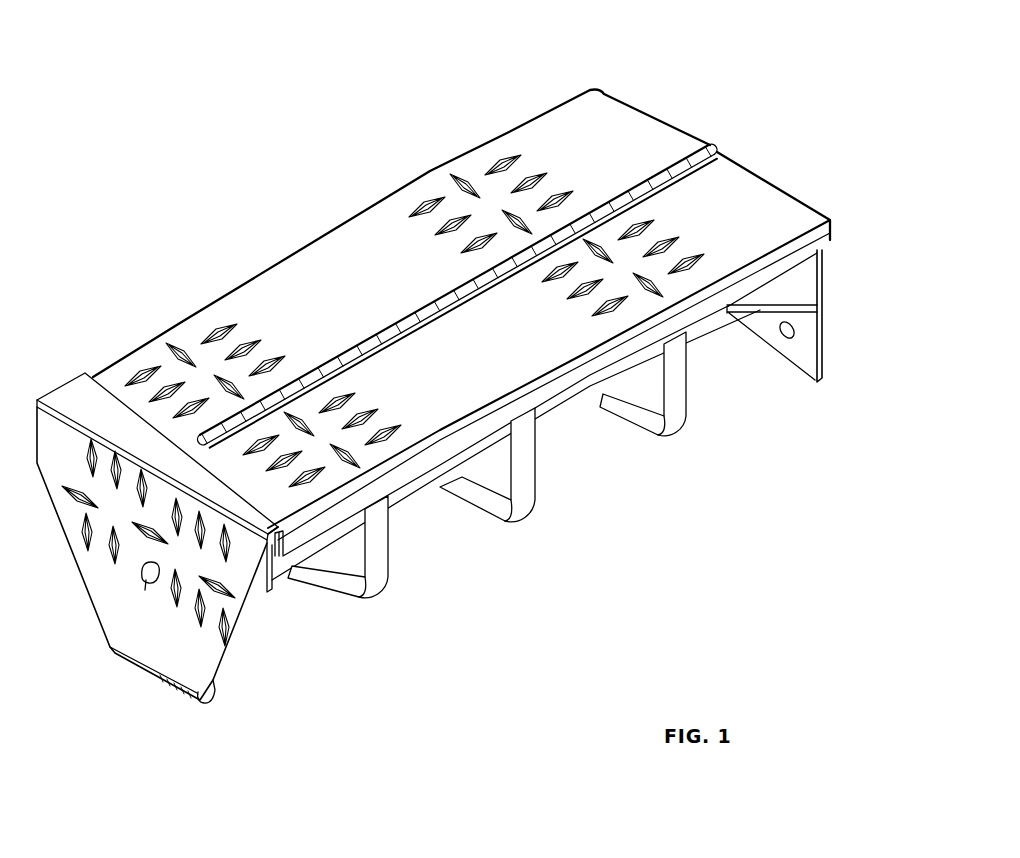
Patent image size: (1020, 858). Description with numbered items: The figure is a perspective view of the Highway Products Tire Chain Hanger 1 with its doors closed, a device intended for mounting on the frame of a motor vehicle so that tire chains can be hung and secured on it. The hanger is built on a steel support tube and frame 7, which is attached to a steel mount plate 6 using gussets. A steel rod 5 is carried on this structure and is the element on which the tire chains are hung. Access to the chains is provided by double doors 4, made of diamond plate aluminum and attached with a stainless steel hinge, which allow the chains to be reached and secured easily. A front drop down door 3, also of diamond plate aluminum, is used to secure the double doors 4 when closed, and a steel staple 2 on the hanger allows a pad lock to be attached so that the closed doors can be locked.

The Highway Products Tire Chain Hanger 1 is at (406, 315).
The steel staple 2 is at (109, 602).
The front drop down door 3 is at (166, 555).
The double doors 4 is at (460, 278).
The steel rod 5 is at (524, 501).
The steel mount plate 6 is at (802, 312).
The steel support tube and frame 7 is at (513, 488).